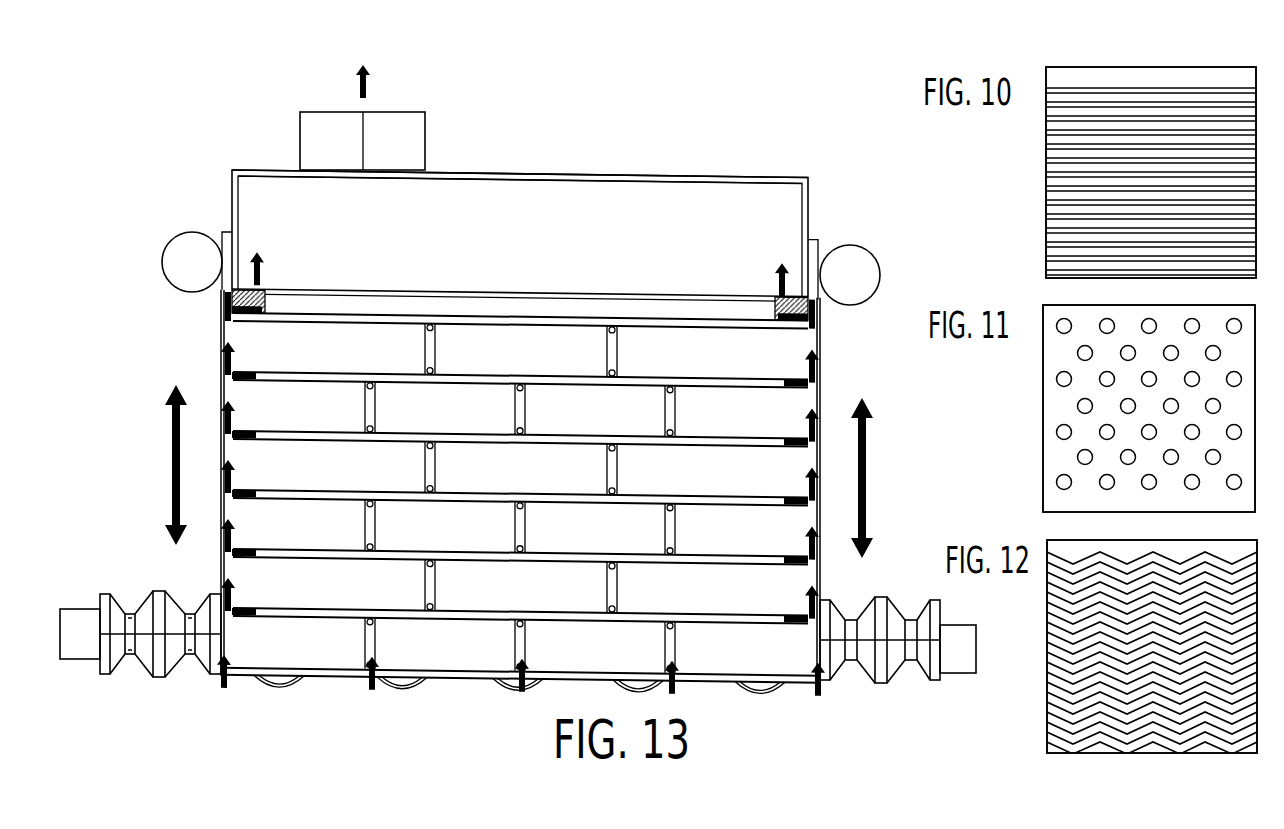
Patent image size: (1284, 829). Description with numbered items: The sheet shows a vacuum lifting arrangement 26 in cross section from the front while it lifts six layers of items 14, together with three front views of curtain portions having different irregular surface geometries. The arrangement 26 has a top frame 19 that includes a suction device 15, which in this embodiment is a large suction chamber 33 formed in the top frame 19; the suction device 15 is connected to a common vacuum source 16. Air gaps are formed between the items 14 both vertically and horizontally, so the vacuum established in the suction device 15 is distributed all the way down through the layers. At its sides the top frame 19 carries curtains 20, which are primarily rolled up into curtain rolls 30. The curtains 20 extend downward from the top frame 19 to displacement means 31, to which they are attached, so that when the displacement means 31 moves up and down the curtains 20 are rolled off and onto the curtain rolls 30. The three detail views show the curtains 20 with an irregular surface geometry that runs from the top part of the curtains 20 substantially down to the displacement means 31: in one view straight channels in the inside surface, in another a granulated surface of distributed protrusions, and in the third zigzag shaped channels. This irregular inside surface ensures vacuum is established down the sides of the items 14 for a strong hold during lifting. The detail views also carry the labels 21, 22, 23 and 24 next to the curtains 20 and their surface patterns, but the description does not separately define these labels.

In FIG. 13, the items 14 is at (312, 646).
In FIG. 13, the suction device 15 is at (520, 212).
In FIG. 13, the vacuum source 16 is at (403, 126).
In FIG. 13, the top frame 19 is at (660, 178).
In FIG. 13, the curtains 20 is at (222, 335).
In FIG. 10, the curtains 20 is at (1075, 172).
In FIG. 11, the curtains 20 is at (1055, 400).
In FIG. 12, the curtains 20 is at (1045, 717).
In FIG. 10, the plate 21 is at (1075, 172).
In FIG. 11, the plate 21 is at (1055, 400).
In FIG. 12, the plate 21 is at (1045, 717).
In FIG. 10, the embossments 22 is at (1090, 216).
In FIG. 11, the embossments 22 is at (1085, 455).
In FIG. 12, the embossments 22 is at (1195, 740).
In FIG. 10, the structure elements 23 is at (1110, 237).
In FIG. 11, the structure elements 23 is at (1120, 492).
In FIG. 12, the structure elements 23 is at (1110, 728).
In FIG. 10, the corrugation 24 is at (1068, 142).
In FIG. 12, the corrugation 24 is at (1065, 622).
In FIG. 13, the vacuum lifting arrangement 26 is at (158, 135).
In FIG. 13, the curtain rolls 30 is at (190, 262).
In FIG. 13, the displacement means 31 is at (113, 647).
In FIG. 13, the suction chamber 33 is at (520, 212).